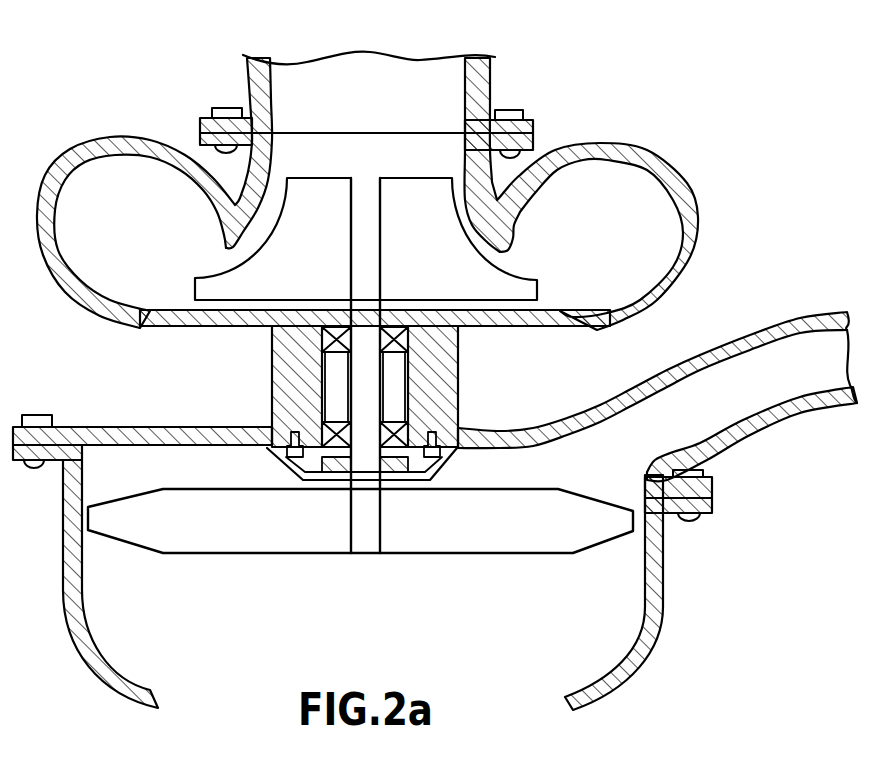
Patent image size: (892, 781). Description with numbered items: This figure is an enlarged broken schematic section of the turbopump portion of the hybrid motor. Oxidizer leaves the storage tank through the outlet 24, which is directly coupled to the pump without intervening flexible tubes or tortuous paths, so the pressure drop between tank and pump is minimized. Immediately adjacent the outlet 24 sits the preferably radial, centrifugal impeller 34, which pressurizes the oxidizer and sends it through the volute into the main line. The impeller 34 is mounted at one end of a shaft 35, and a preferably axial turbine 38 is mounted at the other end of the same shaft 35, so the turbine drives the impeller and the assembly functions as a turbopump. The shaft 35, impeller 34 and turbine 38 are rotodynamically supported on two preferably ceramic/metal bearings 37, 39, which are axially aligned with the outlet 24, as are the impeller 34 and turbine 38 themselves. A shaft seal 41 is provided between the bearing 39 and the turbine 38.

The outlet 24 is at (417, 68).
The impeller 34 is at (408, 192).
The shaft 35 is at (367, 405).
The bearing 37 is at (317, 348).
The turbine 38 is at (522, 555).
The bearing 39 is at (330, 425).
The shaft seal 41 is at (322, 477).